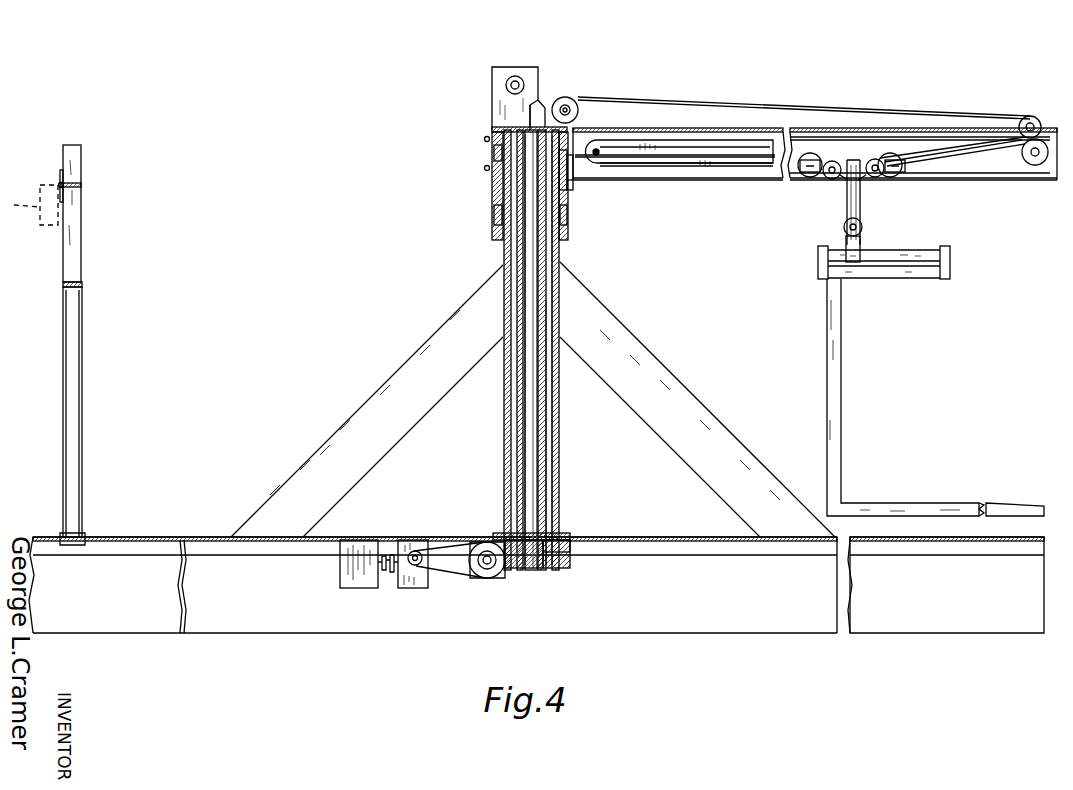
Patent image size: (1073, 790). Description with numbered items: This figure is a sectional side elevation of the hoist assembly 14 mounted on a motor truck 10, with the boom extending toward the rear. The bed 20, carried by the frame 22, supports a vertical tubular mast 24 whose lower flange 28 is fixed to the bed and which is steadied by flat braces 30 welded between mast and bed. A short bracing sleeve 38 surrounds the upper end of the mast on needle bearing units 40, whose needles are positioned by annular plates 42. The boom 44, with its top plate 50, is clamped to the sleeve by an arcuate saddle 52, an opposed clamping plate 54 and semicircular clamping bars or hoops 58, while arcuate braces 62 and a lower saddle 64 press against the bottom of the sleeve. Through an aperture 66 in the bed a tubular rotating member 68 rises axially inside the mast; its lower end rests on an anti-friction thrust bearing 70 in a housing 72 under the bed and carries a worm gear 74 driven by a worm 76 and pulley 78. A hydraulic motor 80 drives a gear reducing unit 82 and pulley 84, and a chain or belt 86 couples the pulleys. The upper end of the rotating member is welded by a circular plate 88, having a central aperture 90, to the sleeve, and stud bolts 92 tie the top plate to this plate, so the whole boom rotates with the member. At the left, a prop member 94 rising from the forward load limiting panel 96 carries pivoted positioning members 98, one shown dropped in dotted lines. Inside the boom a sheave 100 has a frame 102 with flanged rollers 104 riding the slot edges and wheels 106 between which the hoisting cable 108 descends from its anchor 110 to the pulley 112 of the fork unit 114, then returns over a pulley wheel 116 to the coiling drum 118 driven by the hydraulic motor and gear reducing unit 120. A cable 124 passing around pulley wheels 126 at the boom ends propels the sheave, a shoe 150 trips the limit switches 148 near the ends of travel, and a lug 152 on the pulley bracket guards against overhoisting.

The motor truck 10 is at (792, 634).
The hoist assembly 14 is at (504, 403).
The bed 20 is at (960, 537).
The frame 22 is at (942, 622).
The tubular mast 24 is at (560, 460).
The flange 28 is at (572, 534).
The braces 30 is at (660, 378).
The bracing sleeve 38 is at (494, 218).
The needle bearing units 40 is at (497, 245).
The annular plates 42 is at (562, 240).
The boom 44 is at (657, 180).
The top plate 50 is at (765, 130).
The arcuate saddle 52 is at (590, 180).
The clamping plate 54 is at (494, 150).
The clamping bars or hoops 58 is at (485, 170).
The arcuate braces 62 is at (575, 185).
The saddle 64 is at (573, 215).
The aperture 66 is at (556, 525).
The rotating member 68 is at (537, 432).
The anti-friction thrust bearing 70 is at (565, 543).
The housing 72 is at (570, 545).
The worm gear 74 is at (555, 570).
The worm 76 is at (490, 572).
The sprocket gear or pulley 78 is at (475, 570).
The hydraulic motor 80 is at (355, 588).
The gear reducing unit 82 is at (412, 588).
The sprocket gear or pulley 84 is at (416, 550).
The sprocket chain or belt 86 is at (470, 545).
The circular plate 88 is at (510, 128).
The central aperture 90 is at (540, 100).
The stud bolts 92 is at (515, 130).
The prop member 94 is at (78, 240).
The forward load limiting panel 96 is at (84, 390).
The positioning members 98 is at (78, 173).
The sheave 100 is at (860, 157).
The frame 102 is at (905, 172).
The flanged rollers 104 is at (895, 178).
The wheels 106 is at (877, 178).
The hoisting cable 108 is at (828, 108).
The anchor 110 is at (627, 140).
The pulley 112 is at (845, 232).
The fork unit 114 is at (841, 398).
The pulley wheel 116 is at (1025, 118).
The coiling drum 118 is at (575, 100).
The hydraulic motor and gear reducing unit 120 is at (512, 70).
The cable 124 is at (760, 130).
The pulley wheels 126 is at (1040, 165).
The limit switches 148 is at (1040, 165).
The shoe 150 is at (842, 185).
The lug 152 is at (862, 262).